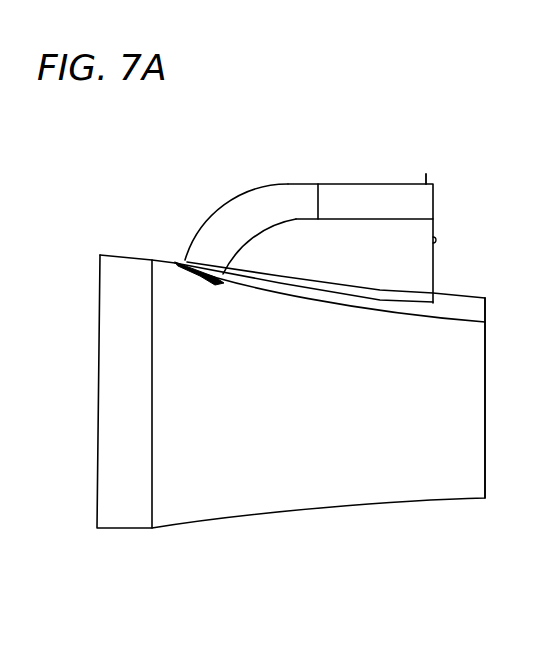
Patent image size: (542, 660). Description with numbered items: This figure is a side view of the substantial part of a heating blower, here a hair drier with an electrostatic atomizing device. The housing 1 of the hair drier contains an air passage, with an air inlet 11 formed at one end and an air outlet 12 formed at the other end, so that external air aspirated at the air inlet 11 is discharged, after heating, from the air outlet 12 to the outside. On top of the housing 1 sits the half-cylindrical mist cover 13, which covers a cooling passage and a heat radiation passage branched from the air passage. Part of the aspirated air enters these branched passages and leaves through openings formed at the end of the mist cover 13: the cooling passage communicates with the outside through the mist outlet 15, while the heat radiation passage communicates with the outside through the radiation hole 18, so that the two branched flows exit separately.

The housing 1 is at (280, 455).
The air inlet 11 is at (98, 358).
The air outlet 12 is at (485, 390).
The mist cover 13 is at (288, 183).
The mist outlet 15 is at (433, 208).
The radiation hole 18 is at (433, 273).